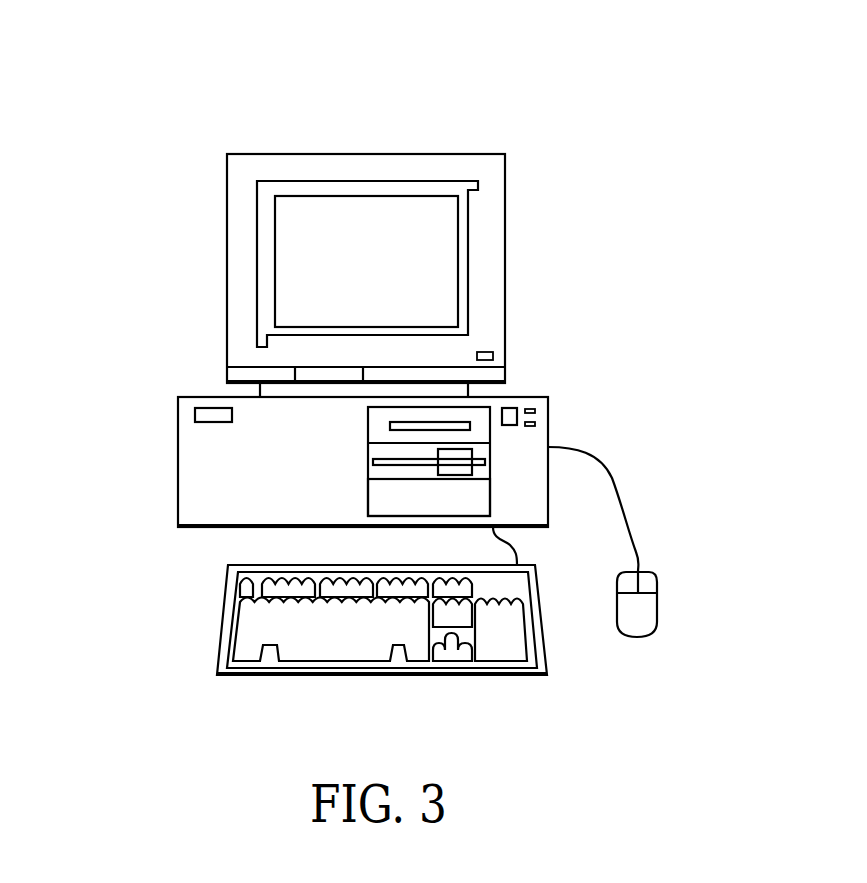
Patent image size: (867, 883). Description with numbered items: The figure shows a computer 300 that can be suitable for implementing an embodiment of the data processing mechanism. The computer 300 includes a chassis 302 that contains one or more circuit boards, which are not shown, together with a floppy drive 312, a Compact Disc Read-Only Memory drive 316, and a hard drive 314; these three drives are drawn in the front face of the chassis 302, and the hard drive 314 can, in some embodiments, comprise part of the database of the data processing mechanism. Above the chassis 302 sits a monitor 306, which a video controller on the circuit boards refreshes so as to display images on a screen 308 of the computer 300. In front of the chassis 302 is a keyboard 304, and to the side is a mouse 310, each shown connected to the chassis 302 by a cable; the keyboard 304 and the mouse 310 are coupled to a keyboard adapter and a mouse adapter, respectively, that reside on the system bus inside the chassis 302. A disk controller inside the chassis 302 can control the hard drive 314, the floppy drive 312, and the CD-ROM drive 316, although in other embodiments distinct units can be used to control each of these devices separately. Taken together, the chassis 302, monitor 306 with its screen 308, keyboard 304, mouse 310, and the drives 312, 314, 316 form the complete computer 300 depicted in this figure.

The computer 300 is at (458, 123).
The chassis 302 is at (178, 468).
The keyboard 304 is at (223, 613).
The monitor 306 is at (237, 154).
The screen 308 is at (300, 257).
The mouse 310 is at (638, 605).
The floppy drive 312 is at (477, 418).
The hard drive 314 is at (473, 500).
The Compact Disc Read-Only Memory (CD-ROM) drive 316 is at (478, 462).